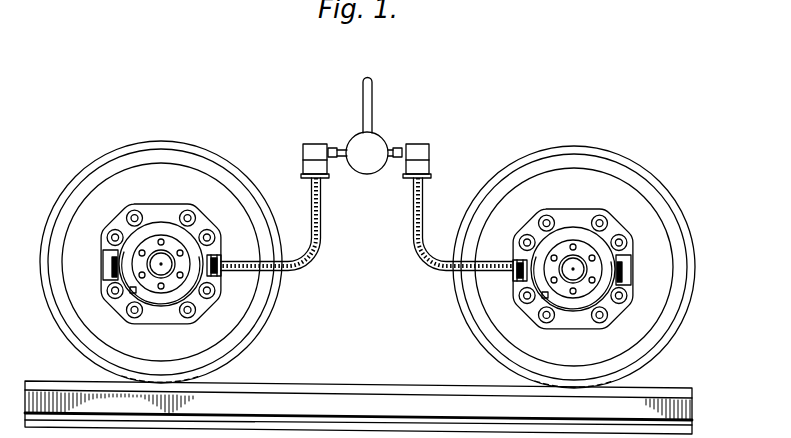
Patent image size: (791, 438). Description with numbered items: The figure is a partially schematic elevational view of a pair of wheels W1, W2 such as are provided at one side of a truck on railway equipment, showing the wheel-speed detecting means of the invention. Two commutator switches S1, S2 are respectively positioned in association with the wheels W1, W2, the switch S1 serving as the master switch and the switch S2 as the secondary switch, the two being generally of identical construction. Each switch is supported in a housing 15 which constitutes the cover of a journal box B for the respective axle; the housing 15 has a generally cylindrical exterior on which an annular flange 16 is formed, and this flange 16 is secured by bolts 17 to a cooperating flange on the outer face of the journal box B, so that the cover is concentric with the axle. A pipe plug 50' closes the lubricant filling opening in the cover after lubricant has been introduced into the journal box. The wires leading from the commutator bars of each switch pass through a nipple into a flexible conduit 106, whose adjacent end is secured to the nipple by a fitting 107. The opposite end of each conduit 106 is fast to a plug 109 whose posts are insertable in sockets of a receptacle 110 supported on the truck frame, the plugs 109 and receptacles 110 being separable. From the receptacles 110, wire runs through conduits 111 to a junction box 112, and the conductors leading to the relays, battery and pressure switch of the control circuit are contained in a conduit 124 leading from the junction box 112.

The wheel W1 is at (95, 163).
The wheel W2 is at (632, 172).
The commutator switch S1 is at (151, 212).
The commutator switch S2 is at (578, 212).
The journal box B is at (168, 208).
The housing 15 is at (125, 252).
The annular flange 16 is at (618, 282).
The bolts 17 is at (620, 234).
The pipe plug 50' is at (365, 289).
The flexible conduit 106 is at (320, 229).
The fitting 107 is at (222, 276).
The plug 109 is at (301, 173).
The receptacle 110 is at (315, 144).
The conduit 111 is at (340, 148).
The junction box 112 is at (376, 139).
The conduit 124 is at (397, 60).